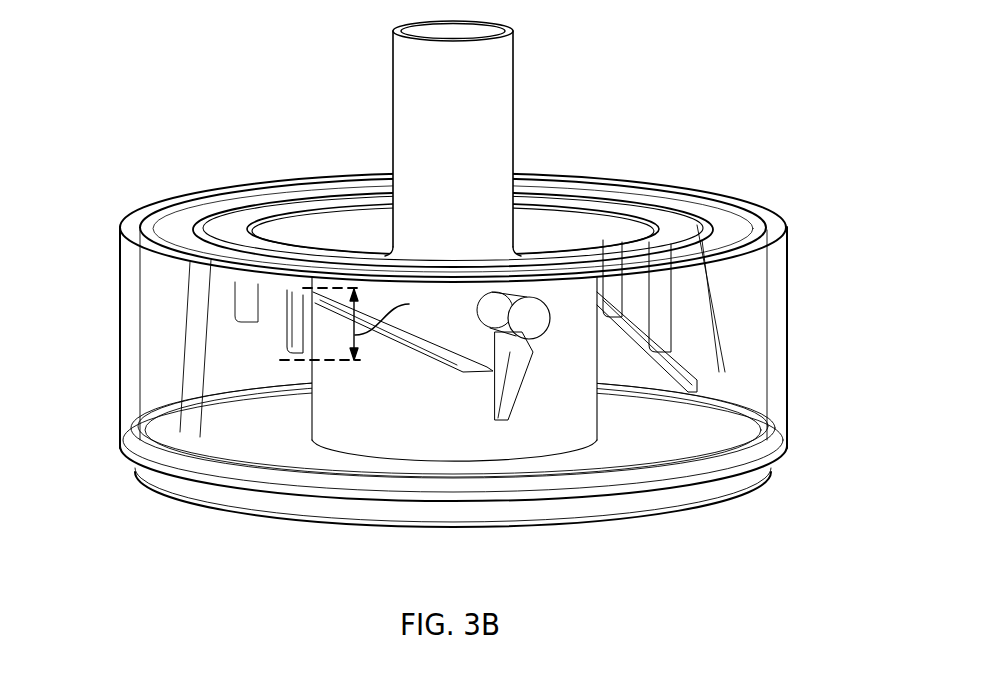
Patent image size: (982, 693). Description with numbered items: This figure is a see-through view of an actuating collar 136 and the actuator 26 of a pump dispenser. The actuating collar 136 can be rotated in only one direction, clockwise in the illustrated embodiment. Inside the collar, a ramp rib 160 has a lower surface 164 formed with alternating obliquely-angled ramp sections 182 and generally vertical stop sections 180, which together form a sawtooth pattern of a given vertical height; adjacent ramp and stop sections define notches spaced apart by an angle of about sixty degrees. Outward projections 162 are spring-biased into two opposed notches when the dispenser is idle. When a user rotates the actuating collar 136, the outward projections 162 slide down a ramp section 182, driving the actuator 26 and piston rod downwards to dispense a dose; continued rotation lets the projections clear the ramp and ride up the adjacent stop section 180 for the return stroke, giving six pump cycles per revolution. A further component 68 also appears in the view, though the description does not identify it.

The actuator 26 is at (532, 242).
The boss 68 is at (531, 297).
The actuating collar 136 is at (790, 321).
The ramp rib 160 is at (653, 300).
The outward projections 162 is at (530, 320).
The lower surface 164 is at (437, 358).
The stop sections 180 is at (297, 331).
The ramp sections 182 is at (642, 348).